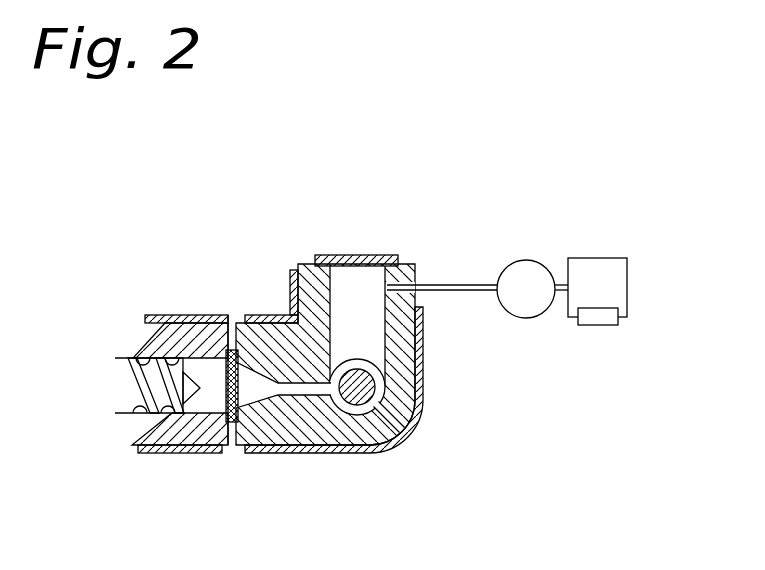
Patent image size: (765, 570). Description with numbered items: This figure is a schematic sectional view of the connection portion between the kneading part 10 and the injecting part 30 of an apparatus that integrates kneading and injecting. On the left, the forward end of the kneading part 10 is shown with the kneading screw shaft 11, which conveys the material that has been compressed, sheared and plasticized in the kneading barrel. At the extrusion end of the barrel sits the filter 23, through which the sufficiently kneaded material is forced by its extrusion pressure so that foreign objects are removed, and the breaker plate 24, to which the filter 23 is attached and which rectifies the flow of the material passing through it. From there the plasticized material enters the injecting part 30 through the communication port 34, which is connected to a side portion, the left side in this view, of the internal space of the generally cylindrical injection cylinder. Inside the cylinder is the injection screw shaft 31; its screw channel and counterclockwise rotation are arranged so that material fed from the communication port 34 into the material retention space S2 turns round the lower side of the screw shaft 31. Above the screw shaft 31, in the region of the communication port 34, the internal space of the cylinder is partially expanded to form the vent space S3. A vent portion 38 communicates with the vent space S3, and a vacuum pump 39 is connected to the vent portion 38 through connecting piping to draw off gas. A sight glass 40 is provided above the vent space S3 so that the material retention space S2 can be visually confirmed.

The kneading part 10 is at (142, 290).
The kneading screw shaft 11 is at (118, 395).
The filter 23 is at (207, 315).
The breaker plate 24 is at (232, 350).
The injecting part 30 is at (371, 330).
The injection screw shaft 31 is at (403, 447).
The communication port 34 is at (265, 450).
The vent portion 38 is at (423, 312).
The vacuum pump 39 is at (618, 291).
The sight glass 40 is at (338, 255).
The material retention space S2 is at (342, 410).
The vent space S3 is at (362, 333).